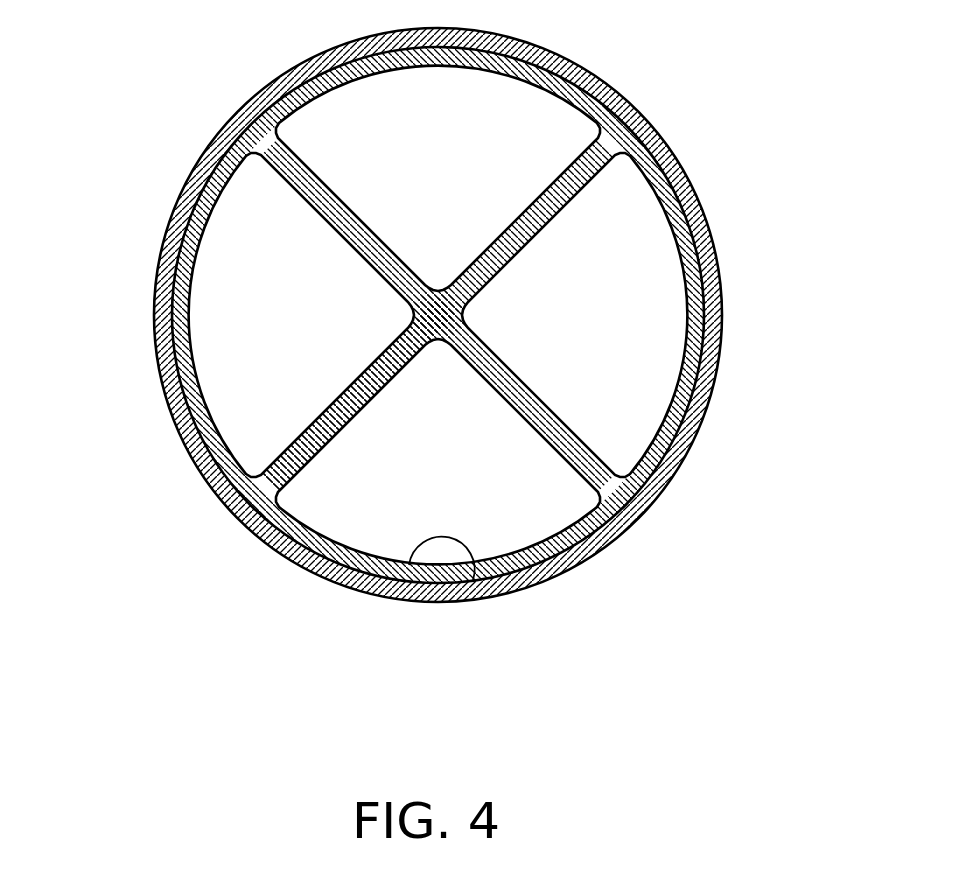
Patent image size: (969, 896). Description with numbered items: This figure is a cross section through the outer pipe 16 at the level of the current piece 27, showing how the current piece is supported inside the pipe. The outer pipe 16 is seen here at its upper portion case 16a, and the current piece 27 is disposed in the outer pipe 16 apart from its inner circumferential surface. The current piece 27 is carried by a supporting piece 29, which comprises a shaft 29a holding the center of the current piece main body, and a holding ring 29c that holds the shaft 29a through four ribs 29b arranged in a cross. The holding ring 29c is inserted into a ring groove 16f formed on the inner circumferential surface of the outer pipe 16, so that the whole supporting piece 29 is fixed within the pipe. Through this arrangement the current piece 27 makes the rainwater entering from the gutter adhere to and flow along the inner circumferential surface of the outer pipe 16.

The outer pipe 16 is at (704, 187).
The upper portion case 16a is at (722, 305).
The ring groove 16f is at (473, 580).
The current piece 27 is at (366, 315).
The supporting piece 29 is at (346, 323).
The shaft 29a is at (468, 312).
The ribs 29b is at (366, 379).
The holding ring 29c is at (201, 396).